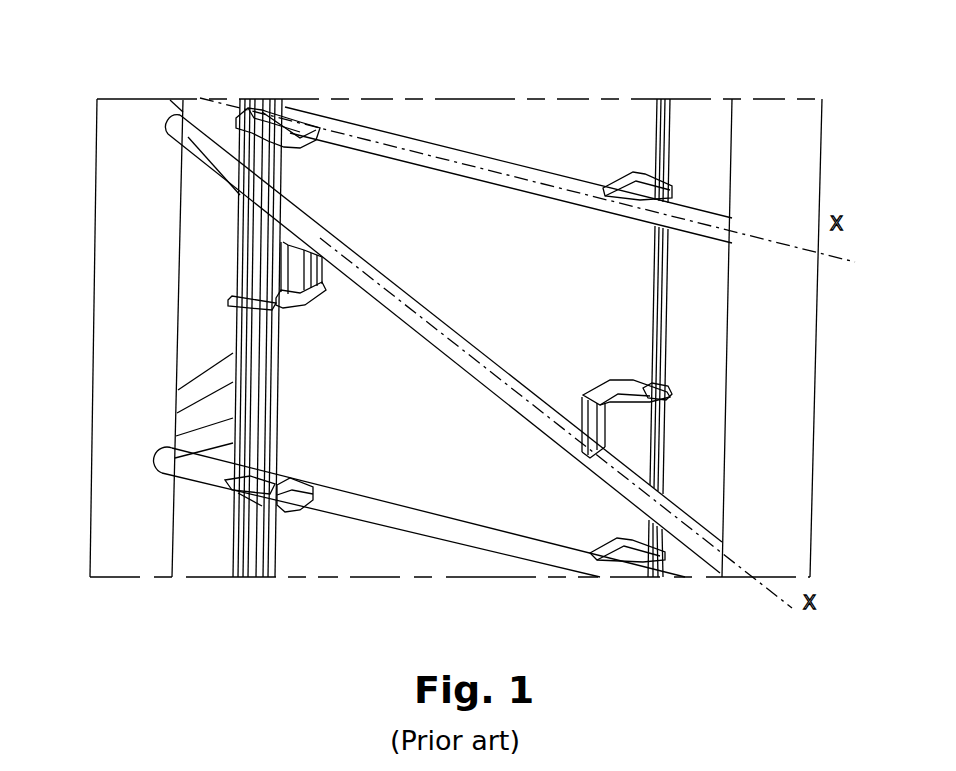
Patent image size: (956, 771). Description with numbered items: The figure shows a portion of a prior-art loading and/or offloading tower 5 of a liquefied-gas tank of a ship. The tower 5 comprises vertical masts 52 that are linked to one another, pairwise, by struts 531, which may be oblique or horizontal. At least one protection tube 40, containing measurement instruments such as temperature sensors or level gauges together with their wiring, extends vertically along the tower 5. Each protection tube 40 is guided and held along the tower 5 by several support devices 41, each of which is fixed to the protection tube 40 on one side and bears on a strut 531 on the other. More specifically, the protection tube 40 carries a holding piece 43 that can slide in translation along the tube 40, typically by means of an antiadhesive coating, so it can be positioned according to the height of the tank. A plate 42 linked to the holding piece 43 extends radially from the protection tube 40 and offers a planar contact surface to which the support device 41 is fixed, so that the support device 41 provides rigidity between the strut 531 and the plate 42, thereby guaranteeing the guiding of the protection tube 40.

The loading and/or offloading tower 5 is at (129, 36).
The vertical mast 52 is at (444, 293).
The protection tube 40 is at (452, 293).
The support device 41 is at (308, 310).
The plate 42 is at (626, 371).
The holding piece 43 is at (674, 351).
The strut 531 is at (443, 312).